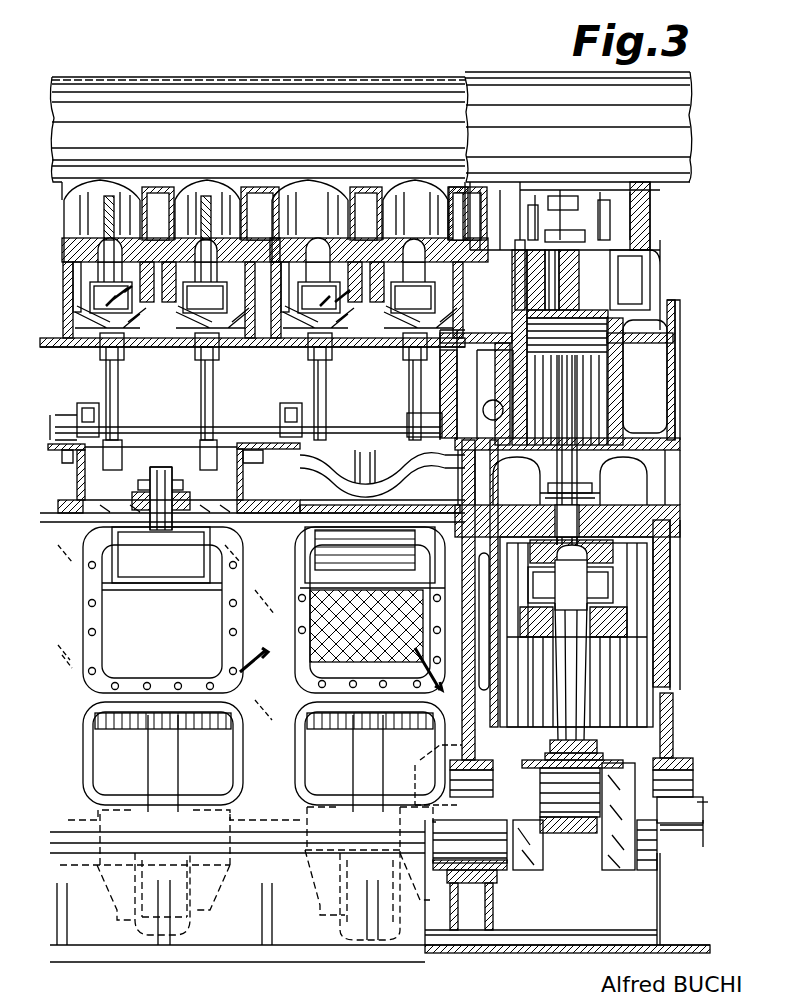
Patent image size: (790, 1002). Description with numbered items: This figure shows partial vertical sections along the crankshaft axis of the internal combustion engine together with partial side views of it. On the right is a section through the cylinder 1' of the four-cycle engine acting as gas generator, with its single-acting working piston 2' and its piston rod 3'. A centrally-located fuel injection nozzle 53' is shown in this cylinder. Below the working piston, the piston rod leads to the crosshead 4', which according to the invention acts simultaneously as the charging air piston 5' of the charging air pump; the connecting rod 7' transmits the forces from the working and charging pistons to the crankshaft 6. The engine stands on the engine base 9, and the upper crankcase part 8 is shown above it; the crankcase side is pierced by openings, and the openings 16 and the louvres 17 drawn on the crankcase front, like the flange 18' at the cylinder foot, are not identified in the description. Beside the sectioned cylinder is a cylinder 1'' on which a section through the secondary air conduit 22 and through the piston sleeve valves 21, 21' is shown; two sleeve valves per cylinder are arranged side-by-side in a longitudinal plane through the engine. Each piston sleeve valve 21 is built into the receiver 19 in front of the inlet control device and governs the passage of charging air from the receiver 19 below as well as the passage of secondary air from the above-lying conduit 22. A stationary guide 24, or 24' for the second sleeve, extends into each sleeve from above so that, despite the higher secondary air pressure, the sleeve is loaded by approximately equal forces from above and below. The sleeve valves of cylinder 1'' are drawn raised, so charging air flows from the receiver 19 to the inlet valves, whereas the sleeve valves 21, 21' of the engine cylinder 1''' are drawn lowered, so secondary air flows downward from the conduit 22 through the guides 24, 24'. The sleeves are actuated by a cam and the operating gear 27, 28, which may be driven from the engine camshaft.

The secondary air conduit 22 is at (272, 149).
The stationary guide 24 is at (109, 206).
The stationary guide 24' is at (204, 206).
The piston sleeve valve 21 is at (216, 401).
The piston sleeve valve 21' is at (297, 401).
The engine cylinder 1''' is at (142, 341).
The cylinder 1'' is at (347, 343).
The cylinder 1' is at (579, 450).
The operating gear 27 is at (175, 428).
The operating gear 28 is at (127, 408).
The receiver 19 is at (256, 393).
The fuel injection nozzle 53' is at (573, 280).
The working piston 2' is at (567, 381).
The piston rod 3' is at (626, 381).
The flange 18' is at (622, 483).
The charging air piston 5' is at (576, 525).
The louvre 17 is at (335, 542).
The screen 16 is at (322, 613).
The crosshead 4' is at (598, 632).
The connecting rod 7' is at (609, 718).
The upper crankcase part 8 is at (281, 773).
The crankshaft 6 is at (513, 863).
The engine base 9 is at (310, 930).